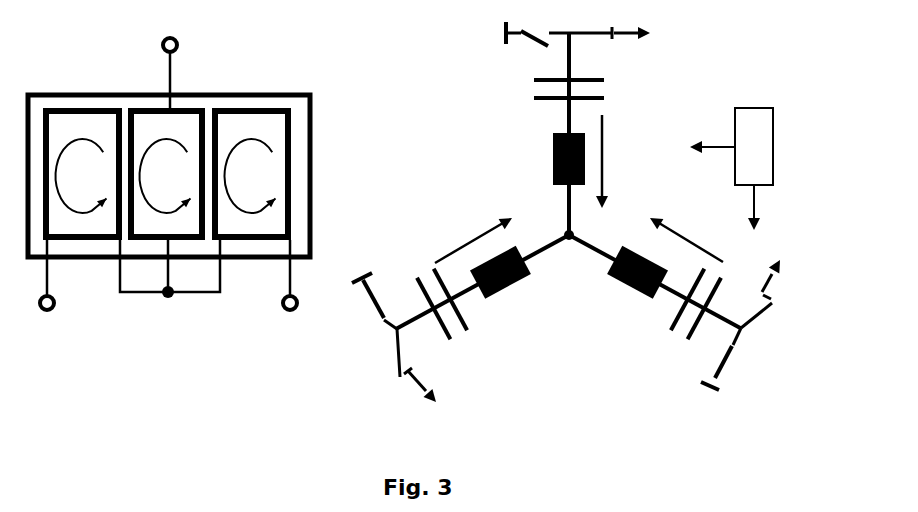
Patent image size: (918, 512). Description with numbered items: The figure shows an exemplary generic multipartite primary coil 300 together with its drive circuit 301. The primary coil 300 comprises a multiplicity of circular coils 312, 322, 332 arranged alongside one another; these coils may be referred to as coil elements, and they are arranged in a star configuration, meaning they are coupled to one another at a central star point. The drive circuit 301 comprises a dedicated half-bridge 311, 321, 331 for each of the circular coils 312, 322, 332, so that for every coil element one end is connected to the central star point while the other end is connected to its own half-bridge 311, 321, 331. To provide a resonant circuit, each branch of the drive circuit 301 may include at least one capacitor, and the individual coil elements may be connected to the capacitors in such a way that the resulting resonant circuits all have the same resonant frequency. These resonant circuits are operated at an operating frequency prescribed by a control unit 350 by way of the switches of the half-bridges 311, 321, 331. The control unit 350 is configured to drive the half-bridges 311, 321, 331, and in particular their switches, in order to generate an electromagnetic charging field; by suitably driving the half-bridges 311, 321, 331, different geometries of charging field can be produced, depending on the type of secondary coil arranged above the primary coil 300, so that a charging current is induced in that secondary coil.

The generic multipartite primary coil 300 is at (158, 384).
The drive circuit 301 is at (578, 405).
The half-bridge 311 is at (377, 350).
The circular coil 312 is at (68, 243).
The half-bridge 321 is at (497, 33).
The circular coil 322 is at (172, 243).
The half-bridge 331 is at (713, 392).
The circular coil 332 is at (227, 243).
The control unit 350 is at (758, 108).